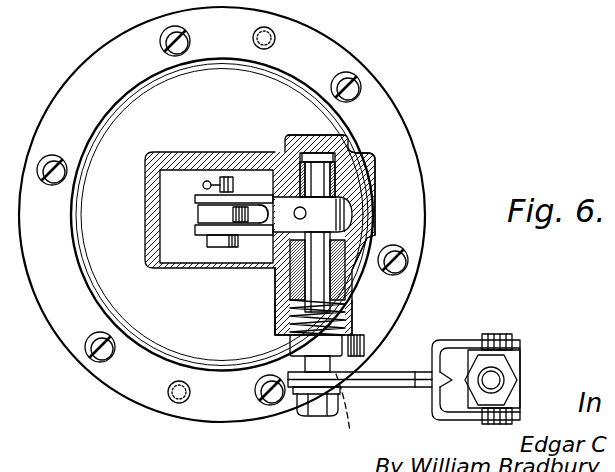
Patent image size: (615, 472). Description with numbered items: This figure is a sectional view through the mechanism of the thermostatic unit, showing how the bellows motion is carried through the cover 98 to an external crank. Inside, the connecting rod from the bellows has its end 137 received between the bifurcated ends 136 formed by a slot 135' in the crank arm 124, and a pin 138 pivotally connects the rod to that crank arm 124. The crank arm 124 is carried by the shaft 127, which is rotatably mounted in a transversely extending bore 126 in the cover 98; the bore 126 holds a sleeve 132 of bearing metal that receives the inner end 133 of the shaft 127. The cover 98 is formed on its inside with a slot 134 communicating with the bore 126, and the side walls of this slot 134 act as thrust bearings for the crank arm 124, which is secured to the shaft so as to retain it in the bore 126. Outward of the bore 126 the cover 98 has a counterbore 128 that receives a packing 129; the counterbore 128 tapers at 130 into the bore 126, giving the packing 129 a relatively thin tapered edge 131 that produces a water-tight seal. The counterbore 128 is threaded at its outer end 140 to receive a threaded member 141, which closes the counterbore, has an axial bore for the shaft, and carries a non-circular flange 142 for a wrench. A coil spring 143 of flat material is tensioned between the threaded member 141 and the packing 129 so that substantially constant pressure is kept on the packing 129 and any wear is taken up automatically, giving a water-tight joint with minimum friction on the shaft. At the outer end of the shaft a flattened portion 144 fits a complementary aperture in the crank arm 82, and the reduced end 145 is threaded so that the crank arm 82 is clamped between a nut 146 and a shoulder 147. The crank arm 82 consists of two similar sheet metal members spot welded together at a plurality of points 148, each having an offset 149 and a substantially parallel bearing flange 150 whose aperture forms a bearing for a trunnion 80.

The trunnion 80 is at (500, 336).
The crank arm 82 is at (256, 390).
The cover 98 is at (285, 155).
The crank arm 124 is at (268, 205).
The bore 126 is at (375, 198).
The shaft 127 is at (345, 240).
The counterbore 128 is at (365, 250).
The packing 129 is at (352, 278).
The taper 130 is at (375, 222).
The tapered edge 131 is at (276, 297).
The sleeve 132 is at (340, 168).
The inner end 133 is at (343, 132).
The slot 134 is at (299, 133).
The slot 135' is at (210, 156).
The bifurcated ends 136 is at (197, 199).
The end of connecting rod 137 is at (197, 214).
The pin 138 is at (190, 155).
The threaded outer end 140 is at (355, 308).
The threaded member 141 is at (352, 325).
The non-circular flange 142 is at (285, 346).
The coil spring 143 is at (252, 317).
The flattened portion 144 is at (355, 412).
The reduced end 145 is at (322, 420).
The nut 146 is at (298, 412).
The shoulder 147 is at (336, 378).
The spot-weld points 148 is at (368, 371).
The offset 149 is at (430, 410).
The bearing flange 150 is at (482, 410).